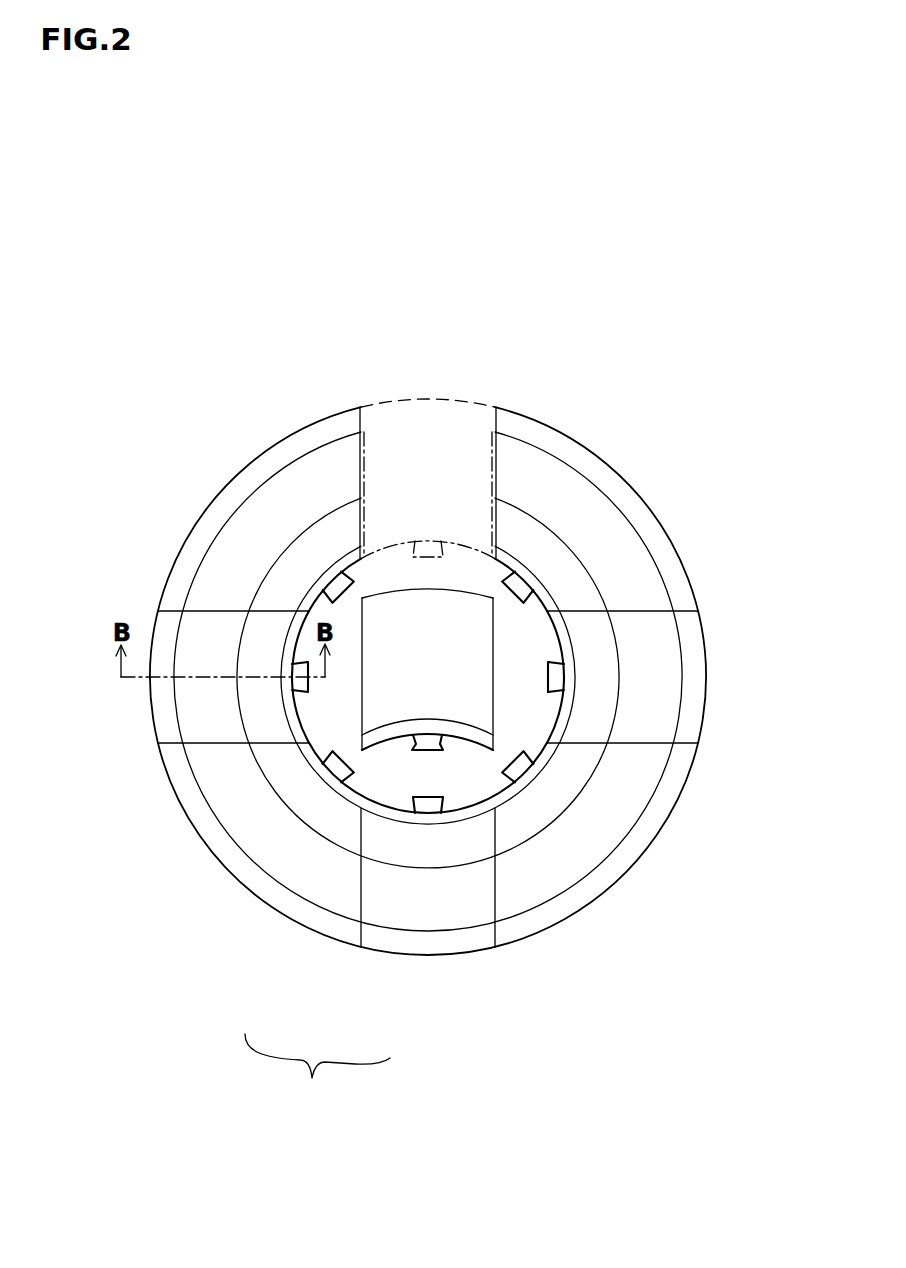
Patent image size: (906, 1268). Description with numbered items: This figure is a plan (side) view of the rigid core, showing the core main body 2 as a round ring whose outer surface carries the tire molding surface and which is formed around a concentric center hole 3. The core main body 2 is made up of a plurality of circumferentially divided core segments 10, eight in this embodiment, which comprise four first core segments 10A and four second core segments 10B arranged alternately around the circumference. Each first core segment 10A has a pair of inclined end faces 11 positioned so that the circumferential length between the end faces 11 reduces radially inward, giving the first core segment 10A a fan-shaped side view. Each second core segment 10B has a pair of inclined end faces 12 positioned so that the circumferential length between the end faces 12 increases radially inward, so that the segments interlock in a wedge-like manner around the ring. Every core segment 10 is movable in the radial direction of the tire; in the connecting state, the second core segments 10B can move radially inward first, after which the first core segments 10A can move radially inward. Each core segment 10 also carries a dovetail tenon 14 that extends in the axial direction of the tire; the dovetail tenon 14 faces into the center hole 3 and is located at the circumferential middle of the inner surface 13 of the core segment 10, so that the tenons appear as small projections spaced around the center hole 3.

The core main body 2 is at (673, 495).
The center hole 3 is at (347, 622).
The core segments 10 is at (317, 1071).
The first core segment 10A is at (278, 497).
The second core segment 10B is at (453, 400).
The inclined end faces 11 is at (360, 433).
The inclined end faces 12 is at (493, 658).
The inner surface 13 is at (302, 722).
The dovetail tenon 14 is at (428, 747).